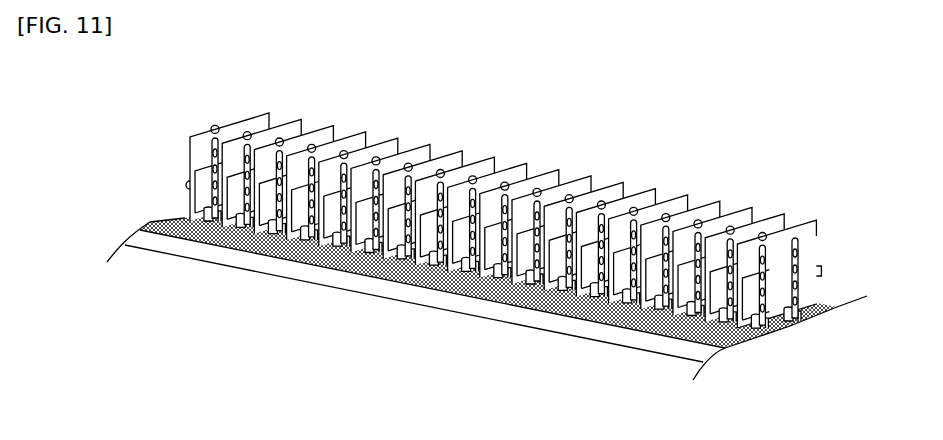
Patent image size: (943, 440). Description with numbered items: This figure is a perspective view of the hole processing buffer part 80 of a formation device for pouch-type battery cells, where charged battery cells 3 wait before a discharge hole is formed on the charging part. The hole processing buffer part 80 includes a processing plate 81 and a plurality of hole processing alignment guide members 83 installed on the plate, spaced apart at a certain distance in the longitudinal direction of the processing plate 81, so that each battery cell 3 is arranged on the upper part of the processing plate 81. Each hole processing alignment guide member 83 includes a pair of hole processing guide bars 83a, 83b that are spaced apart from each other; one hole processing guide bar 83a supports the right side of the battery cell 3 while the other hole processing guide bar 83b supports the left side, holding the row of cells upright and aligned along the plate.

The hole processing buffer part 80 is at (521, 250).
The processing plate 81 is at (650, 343).
The hole processing alignment guide member 83 is at (570, 233).
The hole processing guide bar 83a is at (797, 240).
The hole processing guide bar 83b is at (763, 247).
The battery cell 3 is at (580, 178).